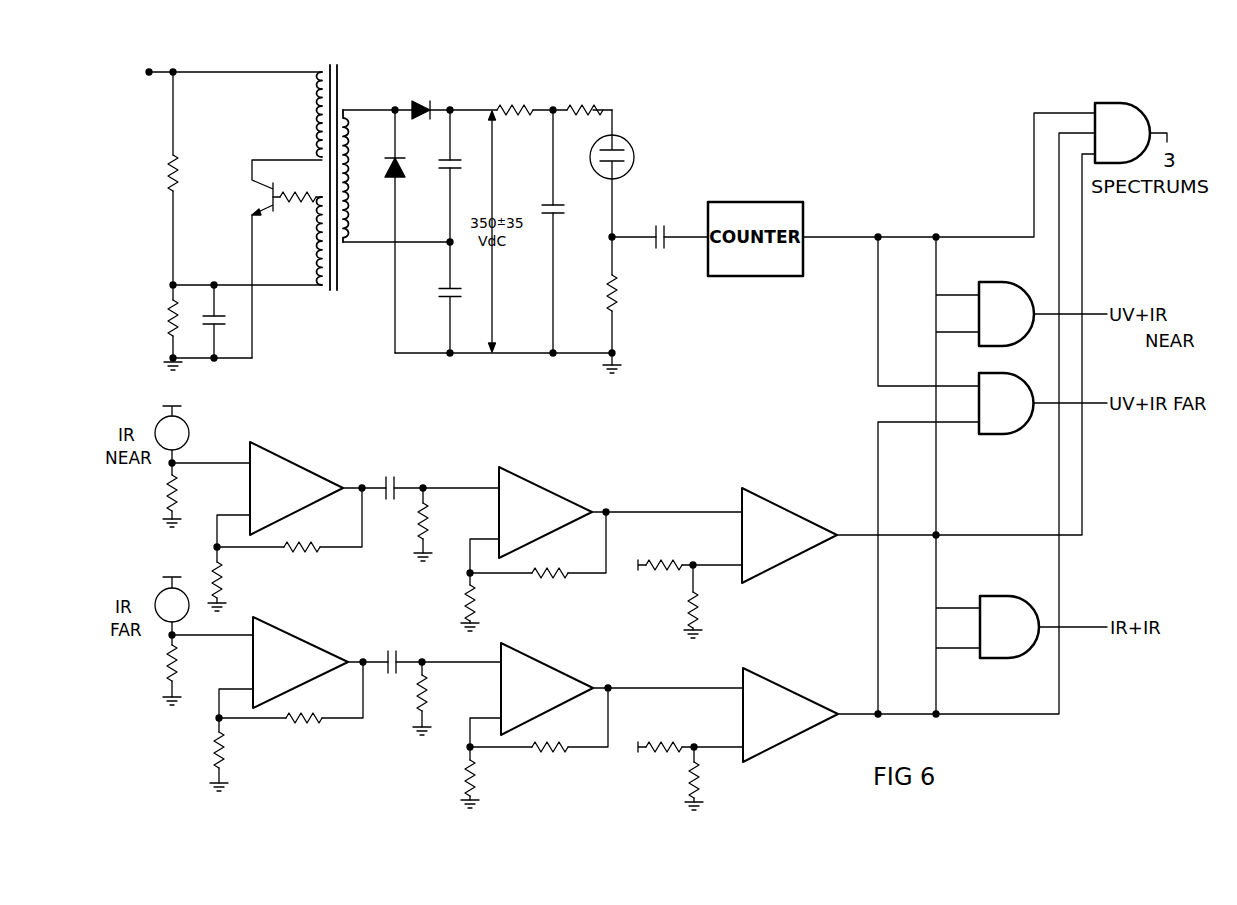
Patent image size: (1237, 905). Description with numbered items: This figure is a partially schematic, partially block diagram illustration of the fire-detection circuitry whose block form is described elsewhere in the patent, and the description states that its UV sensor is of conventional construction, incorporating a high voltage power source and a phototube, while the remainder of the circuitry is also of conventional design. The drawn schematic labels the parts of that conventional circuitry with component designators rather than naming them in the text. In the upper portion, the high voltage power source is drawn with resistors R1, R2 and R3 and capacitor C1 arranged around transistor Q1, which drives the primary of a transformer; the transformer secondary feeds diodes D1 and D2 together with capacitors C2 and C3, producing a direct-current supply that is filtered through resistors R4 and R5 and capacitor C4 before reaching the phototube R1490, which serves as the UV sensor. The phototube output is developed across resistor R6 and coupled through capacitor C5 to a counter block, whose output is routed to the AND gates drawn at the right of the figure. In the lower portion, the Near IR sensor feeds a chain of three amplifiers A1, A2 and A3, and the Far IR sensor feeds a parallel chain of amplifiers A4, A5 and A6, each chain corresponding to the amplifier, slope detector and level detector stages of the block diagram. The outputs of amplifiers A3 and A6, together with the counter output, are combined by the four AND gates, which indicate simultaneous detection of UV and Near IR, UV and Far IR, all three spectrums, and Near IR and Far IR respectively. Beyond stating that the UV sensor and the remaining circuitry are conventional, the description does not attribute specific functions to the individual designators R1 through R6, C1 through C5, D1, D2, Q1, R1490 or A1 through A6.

The resistor R1 is at (232, 326).
The resistor R2 is at (232, 177).
The resistor R3 is at (297, 206).
The resistor R4 (1 megohm) R4 is at (532, 111).
The resistor R5 is at (581, 99).
The resistor R6 (10 kilohm) R6 is at (602, 303).
The capacitor C1 is at (212, 321).
The capacitor C2 is at (462, 176).
The capacitor C3 is at (460, 299).
The capacitor C4 is at (542, 233).
The capacitor C5 (.001 uF) C5 is at (660, 236).
The diode D1 is at (487, 230).
The diode D2 is at (451, 101).
The transistor Q1 is at (281, 259).
The ultraviolet detector tube R1490 is at (637, 173).
The amplifier A1 is at (353, 526).
The amplifier A2 is at (601, 549).
The amplifier A3 is at (737, 563).
The amplifier A4 is at (355, 704).
The amplifier A5 is at (602, 725).
The amplifier A6 is at (738, 739).